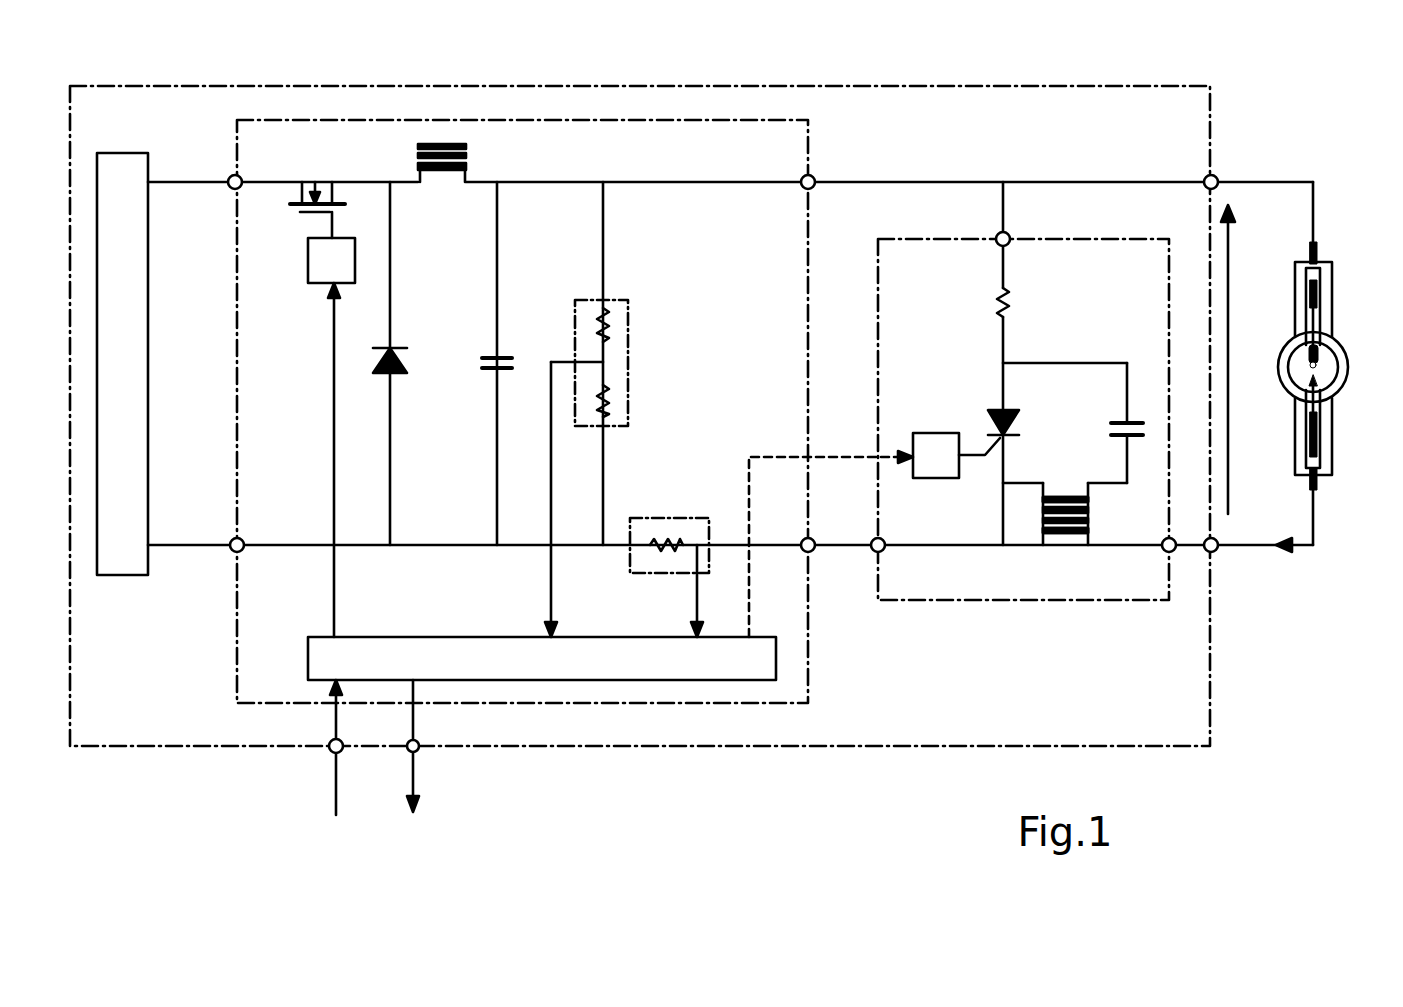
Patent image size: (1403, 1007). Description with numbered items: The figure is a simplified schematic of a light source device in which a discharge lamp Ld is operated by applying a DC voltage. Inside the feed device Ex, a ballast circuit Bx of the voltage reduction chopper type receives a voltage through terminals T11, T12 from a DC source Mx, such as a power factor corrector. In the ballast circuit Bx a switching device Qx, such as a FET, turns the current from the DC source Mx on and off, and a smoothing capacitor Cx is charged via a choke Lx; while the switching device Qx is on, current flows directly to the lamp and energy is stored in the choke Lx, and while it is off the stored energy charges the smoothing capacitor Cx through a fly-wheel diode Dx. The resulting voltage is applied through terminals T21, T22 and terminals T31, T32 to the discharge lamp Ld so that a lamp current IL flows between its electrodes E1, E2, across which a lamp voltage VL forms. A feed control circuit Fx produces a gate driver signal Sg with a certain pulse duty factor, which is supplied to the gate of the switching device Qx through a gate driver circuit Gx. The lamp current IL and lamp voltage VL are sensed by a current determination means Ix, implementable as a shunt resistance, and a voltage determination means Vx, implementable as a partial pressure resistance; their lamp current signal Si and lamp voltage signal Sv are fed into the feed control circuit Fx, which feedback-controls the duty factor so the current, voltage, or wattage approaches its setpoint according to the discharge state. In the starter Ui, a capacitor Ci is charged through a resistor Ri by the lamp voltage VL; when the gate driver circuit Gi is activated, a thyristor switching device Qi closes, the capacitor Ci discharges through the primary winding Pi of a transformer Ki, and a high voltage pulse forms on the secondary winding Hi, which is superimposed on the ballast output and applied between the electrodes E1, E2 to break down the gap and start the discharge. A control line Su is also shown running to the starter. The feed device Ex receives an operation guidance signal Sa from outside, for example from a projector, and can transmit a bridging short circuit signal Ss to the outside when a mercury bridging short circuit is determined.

The feed device Ex is at (1212, 722).
The ballast circuit Bx is at (810, 684).
The starter Ui is at (972, 600).
The DC source Mx is at (122, 575).
The terminal T11 is at (230, 176).
The terminal T12 is at (231, 550).
The terminal T21 is at (814, 176).
The terminal T22 is at (814, 552).
The terminal T31 is at (1218, 176).
The terminal T32 is at (1218, 551).
The switching device Qx is at (296, 206).
The gate driver circuit Gx is at (315, 284).
The gate driver signal Sg is at (334, 590).
The choke Lx is at (445, 170).
The fly-wheel diode Dx is at (398, 373).
The smoothing capacitor Cx is at (488, 358).
The voltage determination means Vx is at (628, 322).
The lamp voltage signal Sv is at (551, 590).
The current determination means Ix is at (666, 518).
The lamp current signal Si is at (697, 590).
The ignition control signal Su is at (761, 457).
The feed control circuit Fx is at (308, 655).
The operation guidance signal Sa is at (336, 778).
The bridging short circuit signal Ss is at (413, 778).
The resistor Ri is at (1010, 300).
The gate driver circuit Gi is at (937, 433).
The switching device Qi is at (1014, 426).
The capacitor Ci is at (1133, 420).
The primary winding Pi is at (1068, 497).
The transformer Ki is at (1090, 512).
The secondary winding Hi is at (1068, 540).
The lamp voltage VL is at (1244, 359).
The lamp current IL is at (1279, 527).
The discharge lamp Ld is at (1348, 367).
The electrode E1 is at (1320, 383).
The electrode E2 is at (1320, 356).